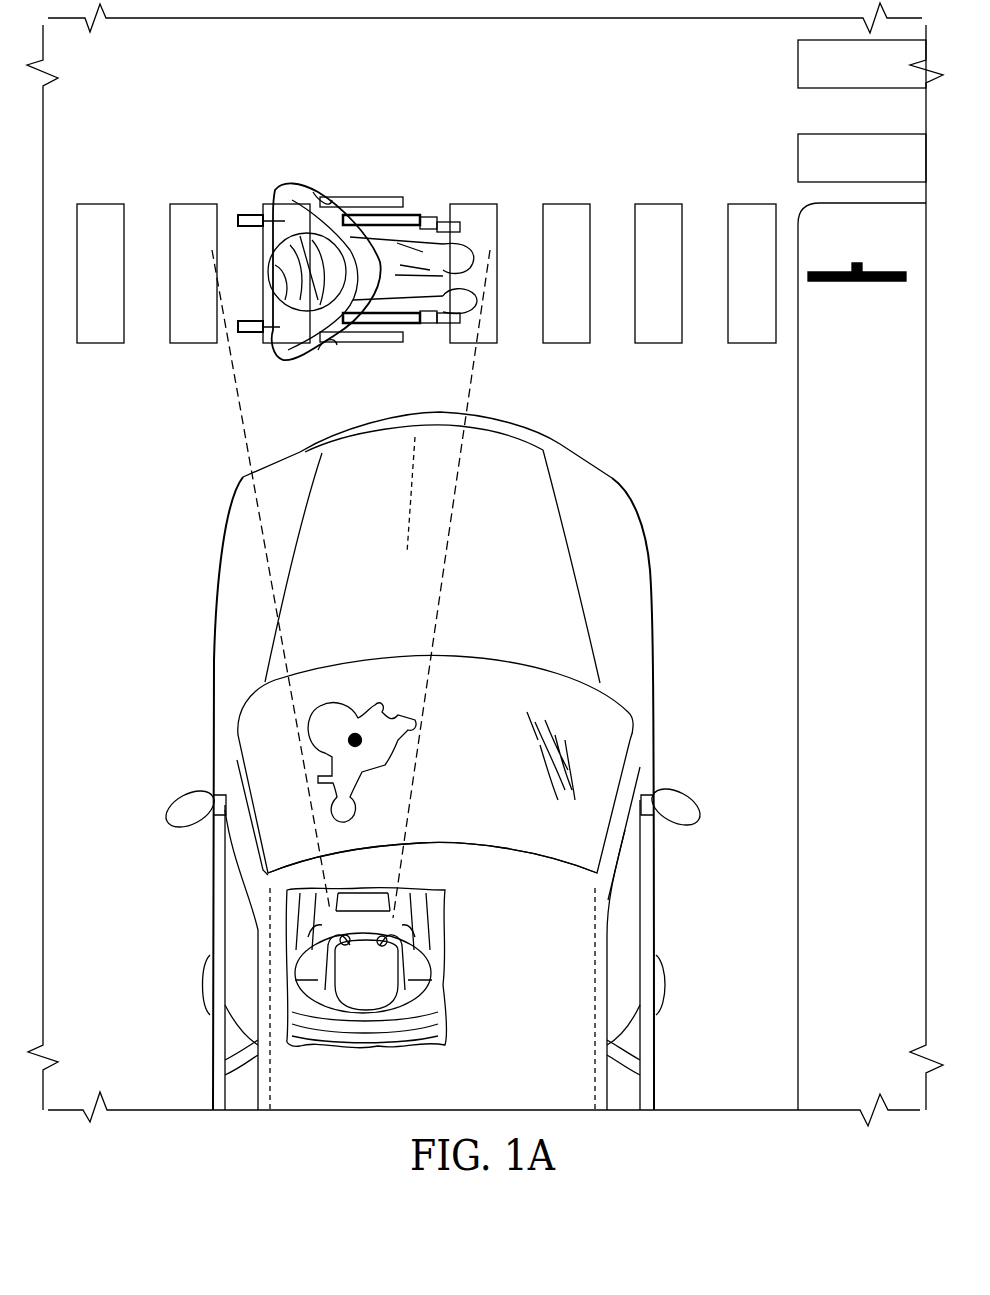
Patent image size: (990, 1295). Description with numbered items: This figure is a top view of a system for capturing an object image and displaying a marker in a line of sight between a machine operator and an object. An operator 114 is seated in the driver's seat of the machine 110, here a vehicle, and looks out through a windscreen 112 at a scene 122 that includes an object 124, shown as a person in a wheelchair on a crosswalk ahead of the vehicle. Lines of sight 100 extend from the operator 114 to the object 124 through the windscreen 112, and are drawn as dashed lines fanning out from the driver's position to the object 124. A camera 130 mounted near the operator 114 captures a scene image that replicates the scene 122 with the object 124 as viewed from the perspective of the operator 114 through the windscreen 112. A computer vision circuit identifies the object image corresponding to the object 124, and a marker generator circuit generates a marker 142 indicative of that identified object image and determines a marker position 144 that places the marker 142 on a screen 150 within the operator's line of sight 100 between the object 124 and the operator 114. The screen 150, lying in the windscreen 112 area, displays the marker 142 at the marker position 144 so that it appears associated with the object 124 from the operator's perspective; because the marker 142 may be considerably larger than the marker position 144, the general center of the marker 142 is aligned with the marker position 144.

The lines of sight 100 is at (241, 402).
The machine 110 is at (657, 872).
The windscreen 112 is at (483, 657).
The operator 114 is at (363, 1005).
The scene 122 is at (200, 98).
The object 124 is at (294, 188).
The camera 130 is at (332, 963).
The marker 142 is at (394, 746).
The marker position 144 is at (353, 737).
The screen 150 is at (488, 838).